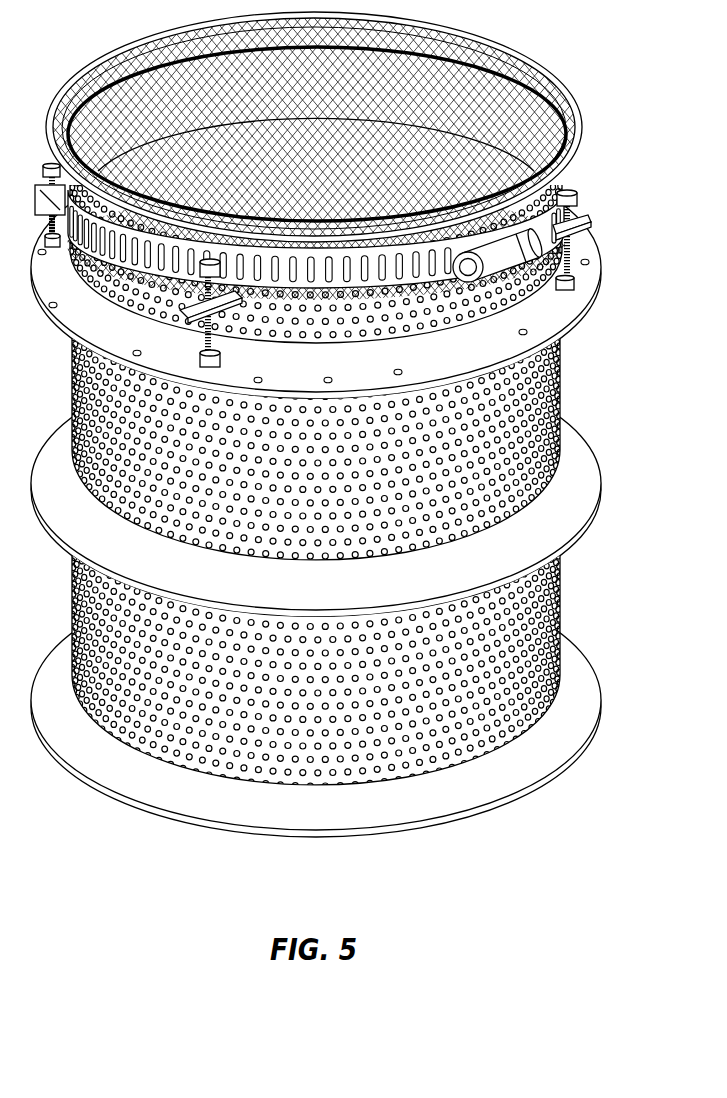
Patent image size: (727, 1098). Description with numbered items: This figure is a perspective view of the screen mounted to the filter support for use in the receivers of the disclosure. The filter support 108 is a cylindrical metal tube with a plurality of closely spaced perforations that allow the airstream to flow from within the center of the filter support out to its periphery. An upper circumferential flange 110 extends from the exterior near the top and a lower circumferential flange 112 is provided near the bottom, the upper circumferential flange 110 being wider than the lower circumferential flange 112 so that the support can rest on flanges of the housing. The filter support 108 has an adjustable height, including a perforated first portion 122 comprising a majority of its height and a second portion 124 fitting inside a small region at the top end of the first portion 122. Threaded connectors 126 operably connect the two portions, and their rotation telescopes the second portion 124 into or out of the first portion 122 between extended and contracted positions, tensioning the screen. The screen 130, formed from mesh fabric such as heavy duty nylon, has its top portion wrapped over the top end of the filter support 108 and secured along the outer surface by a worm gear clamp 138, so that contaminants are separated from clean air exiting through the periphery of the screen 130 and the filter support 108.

The filter support 108 is at (560, 405).
The upper circumferential flange 110 is at (543, 305).
The lower circumferential flange 112 is at (507, 772).
The first portion 122 is at (558, 614).
The second portion 124 is at (133, 57).
The threaded connectors 126 is at (558, 253).
The screen 130 is at (503, 118).
The worm gear clamp 138 is at (503, 257).